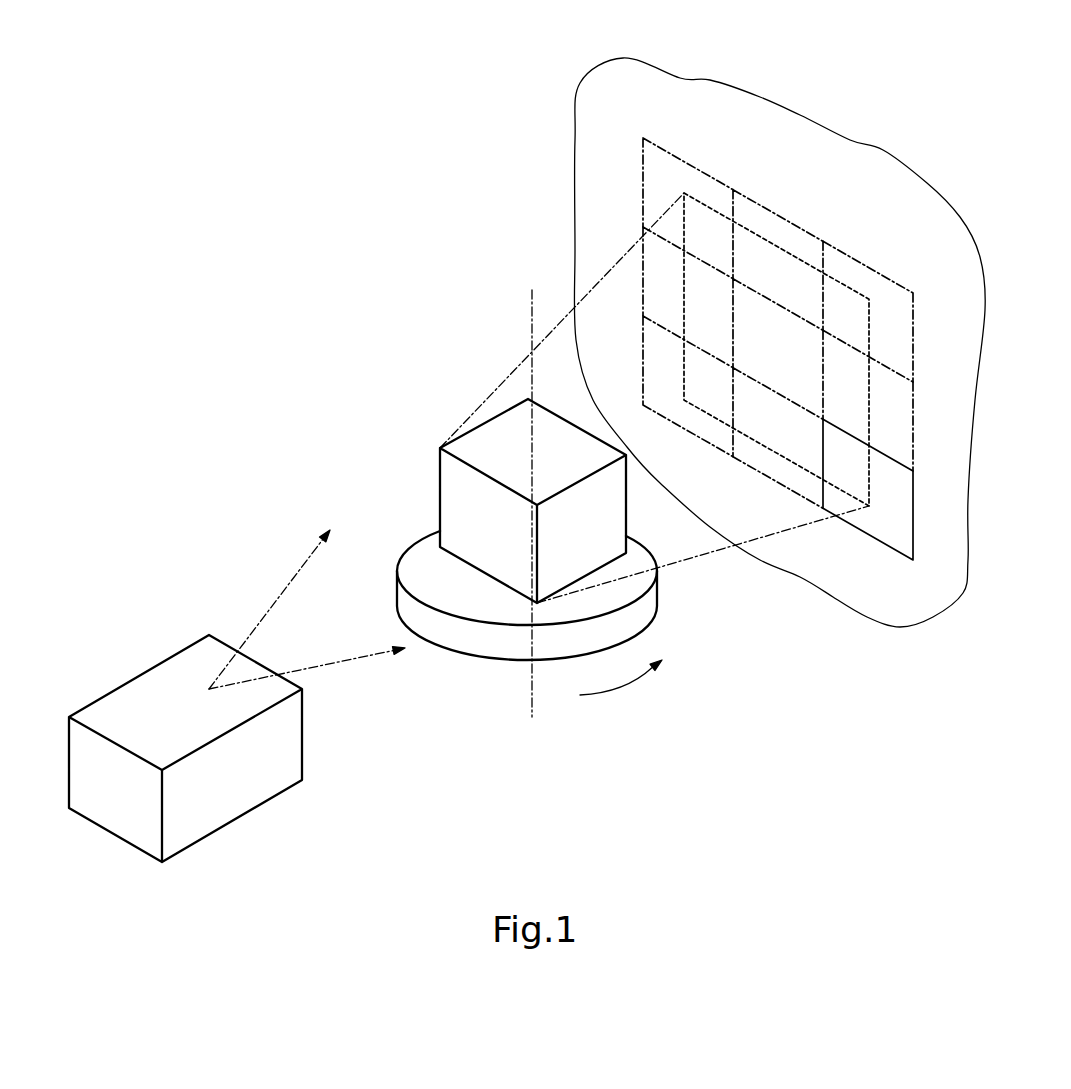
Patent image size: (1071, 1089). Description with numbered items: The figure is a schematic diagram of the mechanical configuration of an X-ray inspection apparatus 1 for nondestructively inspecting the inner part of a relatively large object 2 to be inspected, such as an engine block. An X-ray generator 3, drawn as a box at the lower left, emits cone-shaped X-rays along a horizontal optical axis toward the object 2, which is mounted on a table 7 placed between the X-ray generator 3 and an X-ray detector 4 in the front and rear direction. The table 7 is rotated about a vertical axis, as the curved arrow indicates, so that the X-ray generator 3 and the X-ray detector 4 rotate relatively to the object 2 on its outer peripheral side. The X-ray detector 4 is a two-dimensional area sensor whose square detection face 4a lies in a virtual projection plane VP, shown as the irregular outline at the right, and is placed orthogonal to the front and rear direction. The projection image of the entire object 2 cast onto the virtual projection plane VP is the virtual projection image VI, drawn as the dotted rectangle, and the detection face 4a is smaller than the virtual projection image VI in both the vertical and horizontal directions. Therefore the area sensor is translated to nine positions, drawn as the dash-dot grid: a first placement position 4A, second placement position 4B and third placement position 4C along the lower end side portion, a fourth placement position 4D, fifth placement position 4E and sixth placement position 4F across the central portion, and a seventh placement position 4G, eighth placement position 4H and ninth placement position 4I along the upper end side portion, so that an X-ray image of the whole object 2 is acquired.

The X-ray inspection apparatus 1 is at (266, 270).
The object to be inspected 2 is at (440, 492).
The X-ray generator 3 is at (152, 665).
The table 7 is at (490, 660).
The X-ray detector 4 is at (774, 355).
The first placement position 4A is at (868, 535).
The second placement position 4B is at (747, 465).
The third placement position 4C is at (685, 430).
The fourth placement position 4D is at (914, 432).
The fifth placement position 4E is at (757, 382).
The sixth placement position 4F is at (642, 295).
The seventh placement position 4G is at (872, 268).
The eighth placement position 4H is at (805, 228).
The ninth placement position 4I is at (700, 168).
The detection face 4a is at (905, 536).
The virtual projection plane VP is at (630, 111).
The virtual projection image VI is at (760, 234).